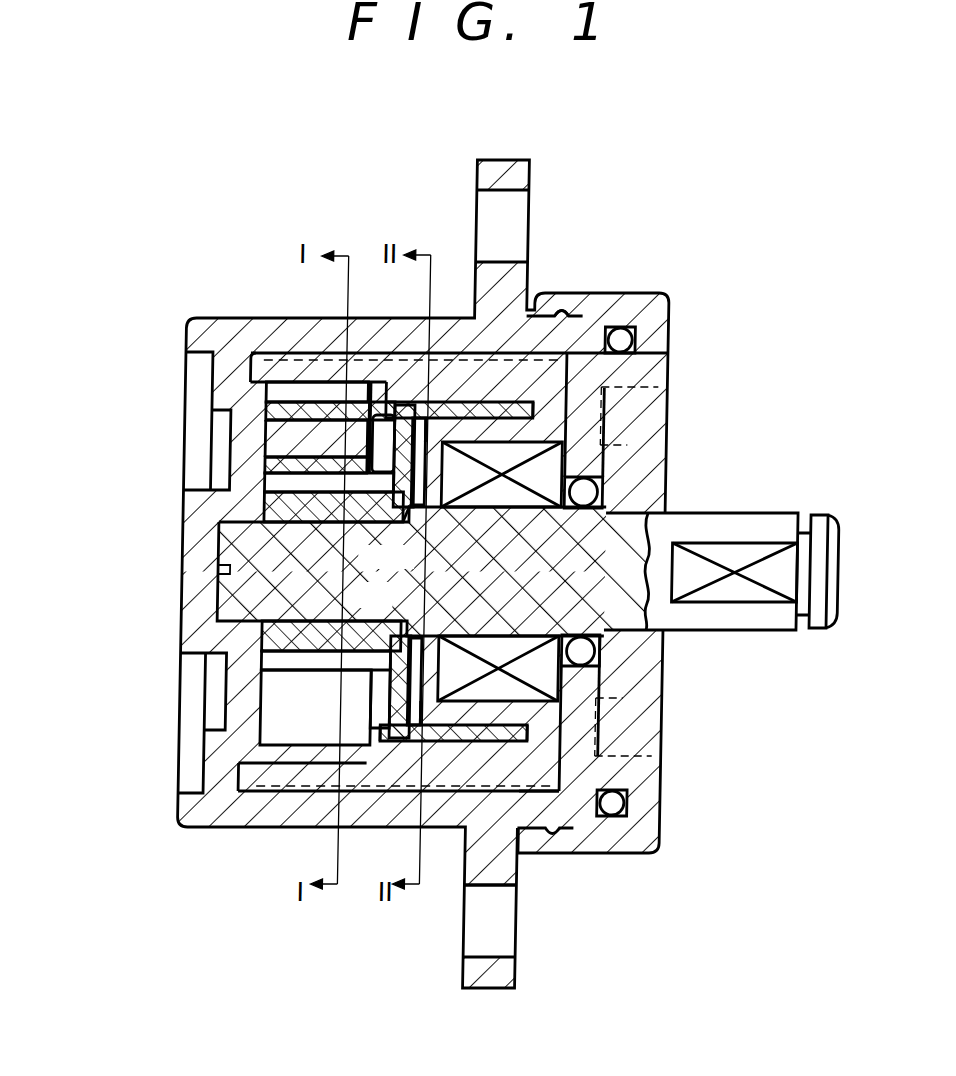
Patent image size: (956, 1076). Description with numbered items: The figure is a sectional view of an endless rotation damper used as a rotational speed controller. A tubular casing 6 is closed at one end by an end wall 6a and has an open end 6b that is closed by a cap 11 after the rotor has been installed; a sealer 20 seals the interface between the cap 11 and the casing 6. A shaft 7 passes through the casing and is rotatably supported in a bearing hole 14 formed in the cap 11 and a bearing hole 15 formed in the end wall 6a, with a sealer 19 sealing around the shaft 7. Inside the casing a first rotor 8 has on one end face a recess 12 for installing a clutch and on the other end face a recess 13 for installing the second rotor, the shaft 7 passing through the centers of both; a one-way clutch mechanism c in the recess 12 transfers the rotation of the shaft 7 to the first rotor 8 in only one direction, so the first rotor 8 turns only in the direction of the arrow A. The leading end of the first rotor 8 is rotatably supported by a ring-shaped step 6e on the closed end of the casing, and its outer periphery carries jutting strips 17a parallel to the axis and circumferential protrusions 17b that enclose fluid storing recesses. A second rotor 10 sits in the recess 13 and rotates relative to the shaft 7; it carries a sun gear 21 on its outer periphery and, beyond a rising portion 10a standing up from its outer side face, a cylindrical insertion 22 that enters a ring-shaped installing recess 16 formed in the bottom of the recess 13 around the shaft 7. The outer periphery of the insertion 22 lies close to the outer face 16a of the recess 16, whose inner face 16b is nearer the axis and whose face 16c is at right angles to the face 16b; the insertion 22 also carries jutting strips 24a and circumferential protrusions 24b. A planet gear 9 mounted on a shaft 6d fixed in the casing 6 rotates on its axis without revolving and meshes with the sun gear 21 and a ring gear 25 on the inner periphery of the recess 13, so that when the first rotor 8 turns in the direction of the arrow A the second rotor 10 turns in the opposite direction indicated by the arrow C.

The casing 6 is at (188, 310).
The end wall 6a is at (276, 753).
The open end 6b is at (590, 333).
The shaft 6d is at (260, 435).
The ring-shaped step 6e is at (246, 365).
The shaft 7 is at (774, 525).
The first rotor 8 is at (596, 372).
The planet gear 9 is at (274, 387).
The second rotor 10 is at (276, 512).
The rising portion 10a is at (405, 527).
The cap 11 is at (643, 722).
The recess for installing a clutch 12 is at (588, 440).
The recess for installing the second rotor 13 is at (299, 383).
The bearing hole 14 is at (634, 532).
The bearing hole 15 is at (228, 575).
The ring-shaped installing recess 16 is at (445, 400).
The one face 16a is at (523, 830).
The other face 16b is at (447, 800).
The face 16c is at (440, 640).
The jutting strips 17a is at (376, 355).
The circumferential protrusions 17b is at (253, 360).
The sealer 19 is at (589, 490).
The sealer 20 is at (619, 338).
The sun gear 21 is at (275, 483).
The cylindrical insertion 22 is at (388, 703).
The jutting strips 24a is at (487, 960).
The circumferential protrusions 24b is at (518, 745).
The ring gear 25 is at (216, 758).
The arrow A is at (850, 540).
The arrow C is at (601, 652).